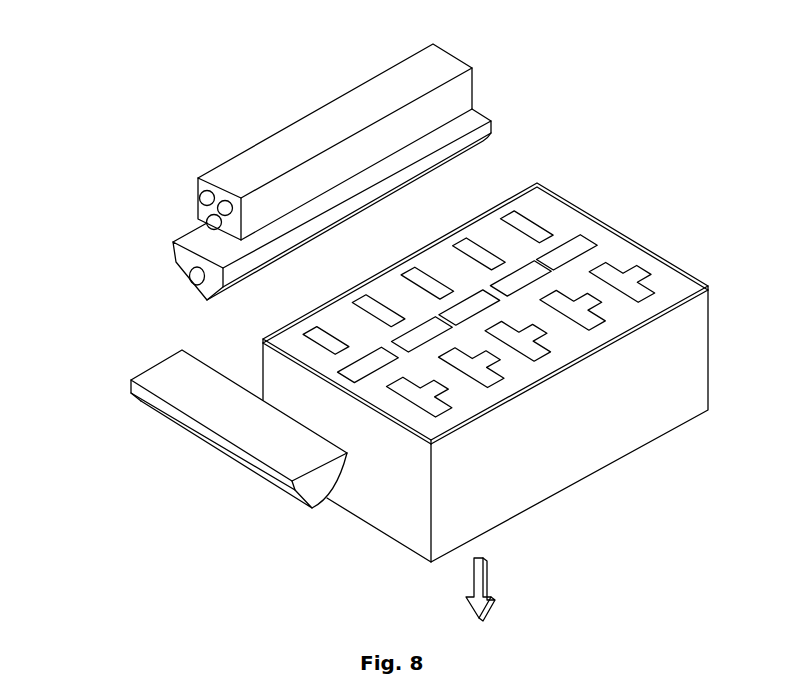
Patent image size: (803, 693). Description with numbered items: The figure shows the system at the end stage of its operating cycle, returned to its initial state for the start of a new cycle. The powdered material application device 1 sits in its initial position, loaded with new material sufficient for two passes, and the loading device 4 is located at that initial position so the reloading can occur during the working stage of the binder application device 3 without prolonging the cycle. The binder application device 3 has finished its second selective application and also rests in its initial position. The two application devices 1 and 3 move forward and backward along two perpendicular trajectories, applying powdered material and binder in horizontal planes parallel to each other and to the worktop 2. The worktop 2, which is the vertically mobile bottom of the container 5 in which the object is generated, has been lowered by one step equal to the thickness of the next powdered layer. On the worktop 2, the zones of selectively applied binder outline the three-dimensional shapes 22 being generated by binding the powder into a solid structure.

The powdered material application device 1 is at (198, 237).
The worktop 2 is at (305, 352).
The shapes 22 is at (318, 335).
The binder application device 3 is at (197, 400).
The loading device 4 is at (313, 142).
The container 5 is at (383, 505).